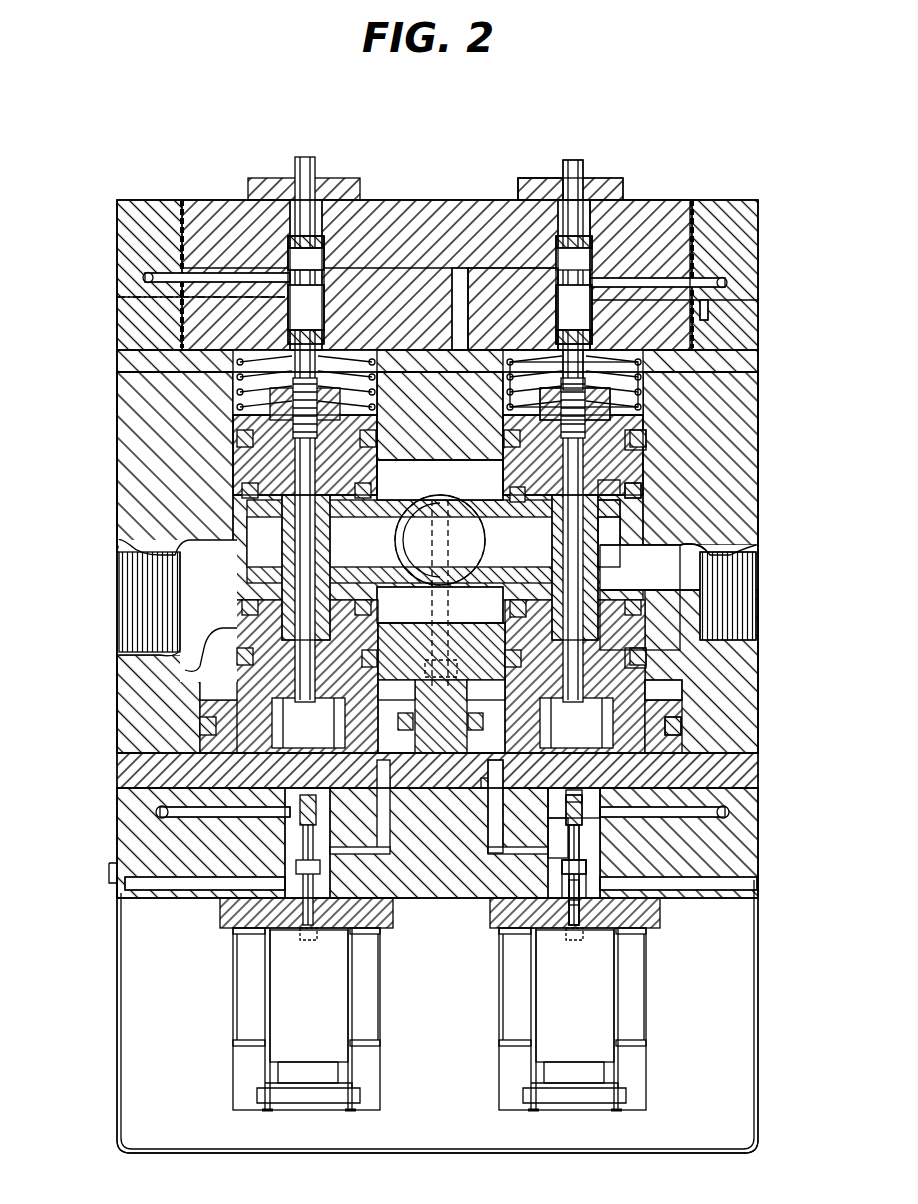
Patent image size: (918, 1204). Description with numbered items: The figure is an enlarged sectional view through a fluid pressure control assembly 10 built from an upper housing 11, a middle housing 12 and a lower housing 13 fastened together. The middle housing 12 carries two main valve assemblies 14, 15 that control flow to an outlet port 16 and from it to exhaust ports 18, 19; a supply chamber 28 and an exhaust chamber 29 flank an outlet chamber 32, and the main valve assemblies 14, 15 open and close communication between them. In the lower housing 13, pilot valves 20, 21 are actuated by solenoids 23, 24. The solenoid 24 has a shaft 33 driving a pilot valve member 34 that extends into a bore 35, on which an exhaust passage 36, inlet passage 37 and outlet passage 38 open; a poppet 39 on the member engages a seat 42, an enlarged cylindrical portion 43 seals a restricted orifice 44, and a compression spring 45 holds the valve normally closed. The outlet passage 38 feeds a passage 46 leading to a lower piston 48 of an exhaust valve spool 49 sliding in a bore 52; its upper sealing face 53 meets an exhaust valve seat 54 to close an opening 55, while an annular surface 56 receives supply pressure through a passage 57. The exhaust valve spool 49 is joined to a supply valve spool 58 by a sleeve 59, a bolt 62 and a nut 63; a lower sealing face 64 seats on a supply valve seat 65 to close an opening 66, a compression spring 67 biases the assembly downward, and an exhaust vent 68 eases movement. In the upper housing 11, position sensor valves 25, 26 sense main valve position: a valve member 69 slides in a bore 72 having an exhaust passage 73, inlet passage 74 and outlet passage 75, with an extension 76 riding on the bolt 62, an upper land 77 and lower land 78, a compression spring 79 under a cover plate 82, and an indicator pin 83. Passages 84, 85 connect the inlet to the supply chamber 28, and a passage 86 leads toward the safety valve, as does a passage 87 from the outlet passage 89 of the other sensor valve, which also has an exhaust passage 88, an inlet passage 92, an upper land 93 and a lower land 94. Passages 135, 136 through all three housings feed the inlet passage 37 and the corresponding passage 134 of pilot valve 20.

The fluid pressure control assembly 10 is at (668, 198).
The upper housing 11 is at (740, 200).
The middle housing 12 is at (755, 416).
The lower housing 13 is at (750, 840).
The main valve assembly 14 is at (248, 470).
The main valve assembly 15 is at (648, 470).
The outlet port 16 is at (403, 540).
The exhaust port 18 is at (150, 640).
The exhaust port 19 is at (745, 647).
The pilot valve 20 is at (300, 825).
The pilot valve 21 is at (584, 825).
The solenoid 23 is at (272, 973).
The solenoid 24 is at (605, 985).
The position sensor valve 25 is at (322, 275).
The position sensor valve 26 is at (560, 270).
The supply chamber 28 is at (440, 479).
The exhaust chamber 29 is at (440, 605).
The outlet chamber 32 is at (262, 548).
The shaft 33 is at (568, 925).
The pilot valve member 34 is at (585, 925).
The bore 35 is at (578, 815).
The exhaust passage 36 is at (640, 880).
The inlet passage 37 is at (605, 808).
The outlet passage 38 is at (562, 840).
The poppet 39 is at (565, 812).
The seat 42 is at (588, 855).
The enlarged cylindrical portion 43 is at (592, 905).
The restricted orifice 44 is at (568, 888).
The compression spring 45 is at (572, 795).
The passage 46 is at (490, 812).
The lower piston 48 is at (682, 730).
The exhaust valve spool 49 is at (682, 690).
The bore 52 is at (645, 630).
The upper sealing face 53 is at (645, 593).
The exhaust valve seat 54 is at (650, 570).
The opening 55 is at (617, 570).
The annular surface 56 is at (660, 690).
The passage 57 is at (432, 606).
The supply valve spool 58 is at (655, 470).
The sleeve 59 is at (612, 542).
The bolt 62 is at (650, 450).
The nut 63 is at (612, 415).
The lower sealing face 64 is at (645, 492).
The supply valve seat 65 is at (625, 508).
The opening 66 is at (555, 567).
The compression spring 67 is at (640, 400).
The exhaust vent 68 is at (735, 370).
The valve member 69 is at (570, 353).
The bore 72 is at (592, 262).
The exhaust passage 73 is at (720, 308).
The inlet passage 74 is at (522, 265).
The outlet passage 75 is at (665, 278).
The extension 76 is at (583, 372).
The upper land 77 is at (558, 250).
The lower land 78 is at (558, 312).
The compression spring 79 is at (595, 190).
The cover plate 82 is at (530, 180).
The indicator pin 83 is at (563, 175).
The passage 84 is at (452, 300).
The passage 85 is at (455, 432).
The passage 86 is at (730, 282).
The passage 87 is at (145, 277).
The exhaust passage 88 is at (278, 300).
The outlet passage 89 is at (290, 268).
The inlet passage 92 is at (330, 262).
The upper land 93 is at (290, 250).
The lower land 94 is at (324, 315).
The passage 134 is at (262, 790).
The passage 135 is at (158, 812).
The passage 136 is at (729, 812).